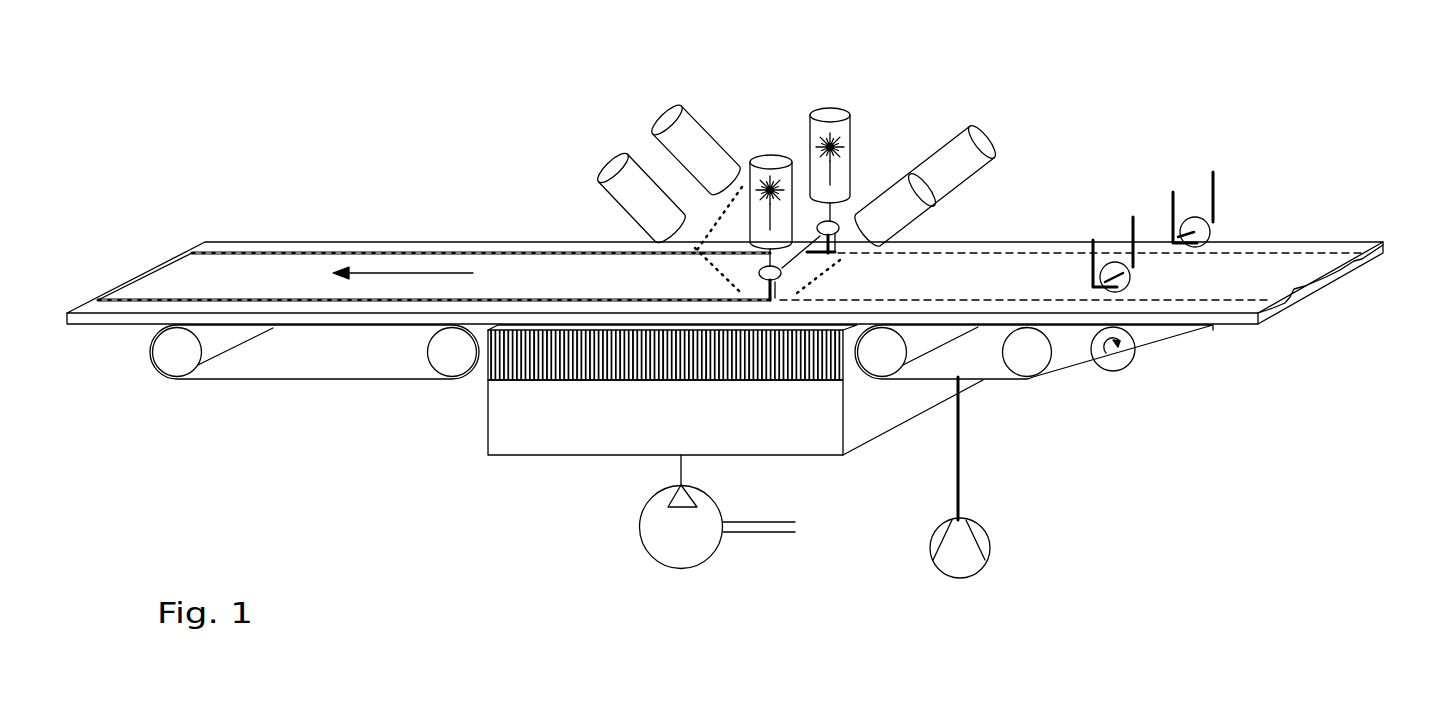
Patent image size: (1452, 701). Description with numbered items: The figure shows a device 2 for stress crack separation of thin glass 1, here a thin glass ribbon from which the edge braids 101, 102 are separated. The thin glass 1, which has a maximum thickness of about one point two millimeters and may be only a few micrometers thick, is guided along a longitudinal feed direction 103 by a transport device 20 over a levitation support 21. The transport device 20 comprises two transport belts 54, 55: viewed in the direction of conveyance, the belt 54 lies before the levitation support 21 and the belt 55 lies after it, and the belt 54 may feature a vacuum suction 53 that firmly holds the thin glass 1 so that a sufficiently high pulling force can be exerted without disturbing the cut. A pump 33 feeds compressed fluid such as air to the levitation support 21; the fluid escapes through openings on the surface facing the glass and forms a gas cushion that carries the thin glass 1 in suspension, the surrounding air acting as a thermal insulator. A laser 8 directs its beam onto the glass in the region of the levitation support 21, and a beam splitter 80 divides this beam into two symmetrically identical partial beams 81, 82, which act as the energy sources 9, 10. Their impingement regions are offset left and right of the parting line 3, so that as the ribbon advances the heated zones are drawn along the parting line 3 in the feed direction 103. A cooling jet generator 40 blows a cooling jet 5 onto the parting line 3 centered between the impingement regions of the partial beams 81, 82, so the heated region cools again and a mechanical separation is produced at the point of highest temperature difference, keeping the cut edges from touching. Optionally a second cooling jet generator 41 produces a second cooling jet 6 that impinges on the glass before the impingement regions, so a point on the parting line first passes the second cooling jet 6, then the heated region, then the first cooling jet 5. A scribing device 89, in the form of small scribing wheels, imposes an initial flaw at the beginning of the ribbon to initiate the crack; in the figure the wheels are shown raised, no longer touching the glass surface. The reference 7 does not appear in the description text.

The thin glass 1 is at (772, 203).
The device 2 is at (903, 61).
The parting line 3 is at (1040, 300).
The cooling jet 5 is at (738, 190).
The second cooling jet 6 is at (833, 258).
The web edges 7 is at (434, 202).
The laser 8 is at (815, 263).
The energy source 9 is at (772, 300).
The energy source 10 is at (864, 371).
The transport device 20 is at (314, 437).
The levitation support 21 is at (488, 382).
The pump 33 is at (638, 523).
The cooling jet generator 40 is at (670, 115).
The second cooling jet generator 41 is at (937, 130).
The vacuum suction 53 is at (990, 545).
The transport belt 54 is at (895, 378).
The transport belt 55 is at (230, 380).
The beam splitter 80 is at (842, 230).
The partial beam 81 is at (761, 334).
The partial beam 82 is at (842, 309).
The scribing device 89 is at (1110, 265).
The braid 101 is at (237, 247).
The braid 102 is at (147, 310).
The longitudinal feed direction 103 is at (427, 268).